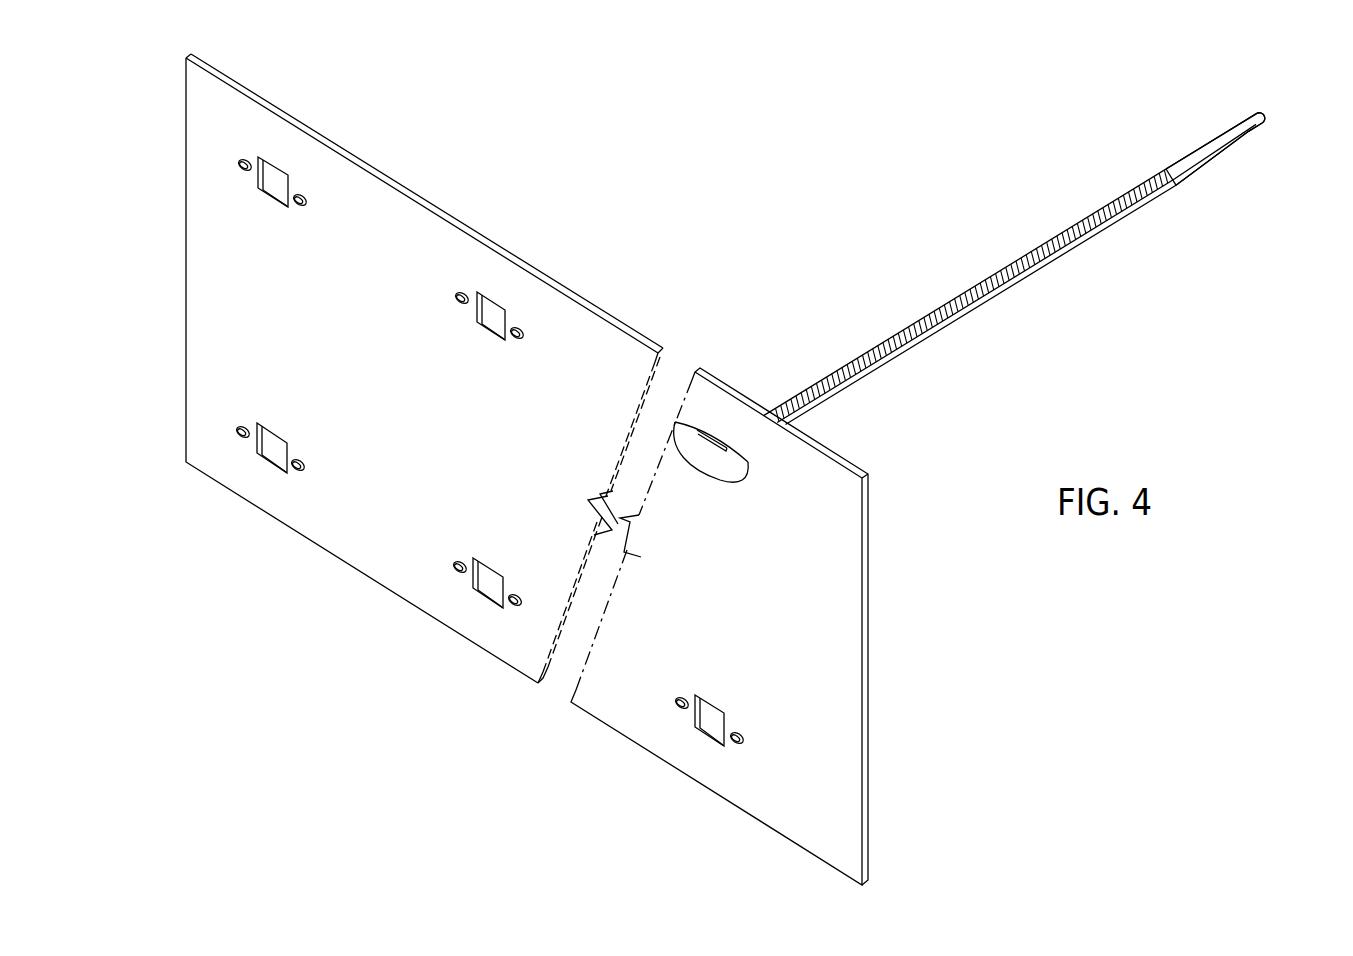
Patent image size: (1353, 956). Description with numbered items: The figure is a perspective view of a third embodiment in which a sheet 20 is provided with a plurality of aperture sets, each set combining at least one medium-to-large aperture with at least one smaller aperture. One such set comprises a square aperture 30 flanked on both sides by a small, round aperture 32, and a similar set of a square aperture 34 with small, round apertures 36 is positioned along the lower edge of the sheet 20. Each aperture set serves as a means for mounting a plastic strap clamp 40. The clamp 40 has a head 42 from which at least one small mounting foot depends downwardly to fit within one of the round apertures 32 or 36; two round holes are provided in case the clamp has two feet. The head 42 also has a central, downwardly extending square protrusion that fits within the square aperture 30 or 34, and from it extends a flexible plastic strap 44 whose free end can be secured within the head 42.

The sheet 20 is at (822, 440).
The square aperture 30 is at (266, 199).
The small round aperture 32 is at (465, 307).
The square aperture 34 is at (489, 558).
The small round apertures 36 is at (297, 459).
The plastic strap clamp 40 is at (942, 305).
The head 42 is at (707, 474).
The flexible plastic strap 44 is at (1202, 152).